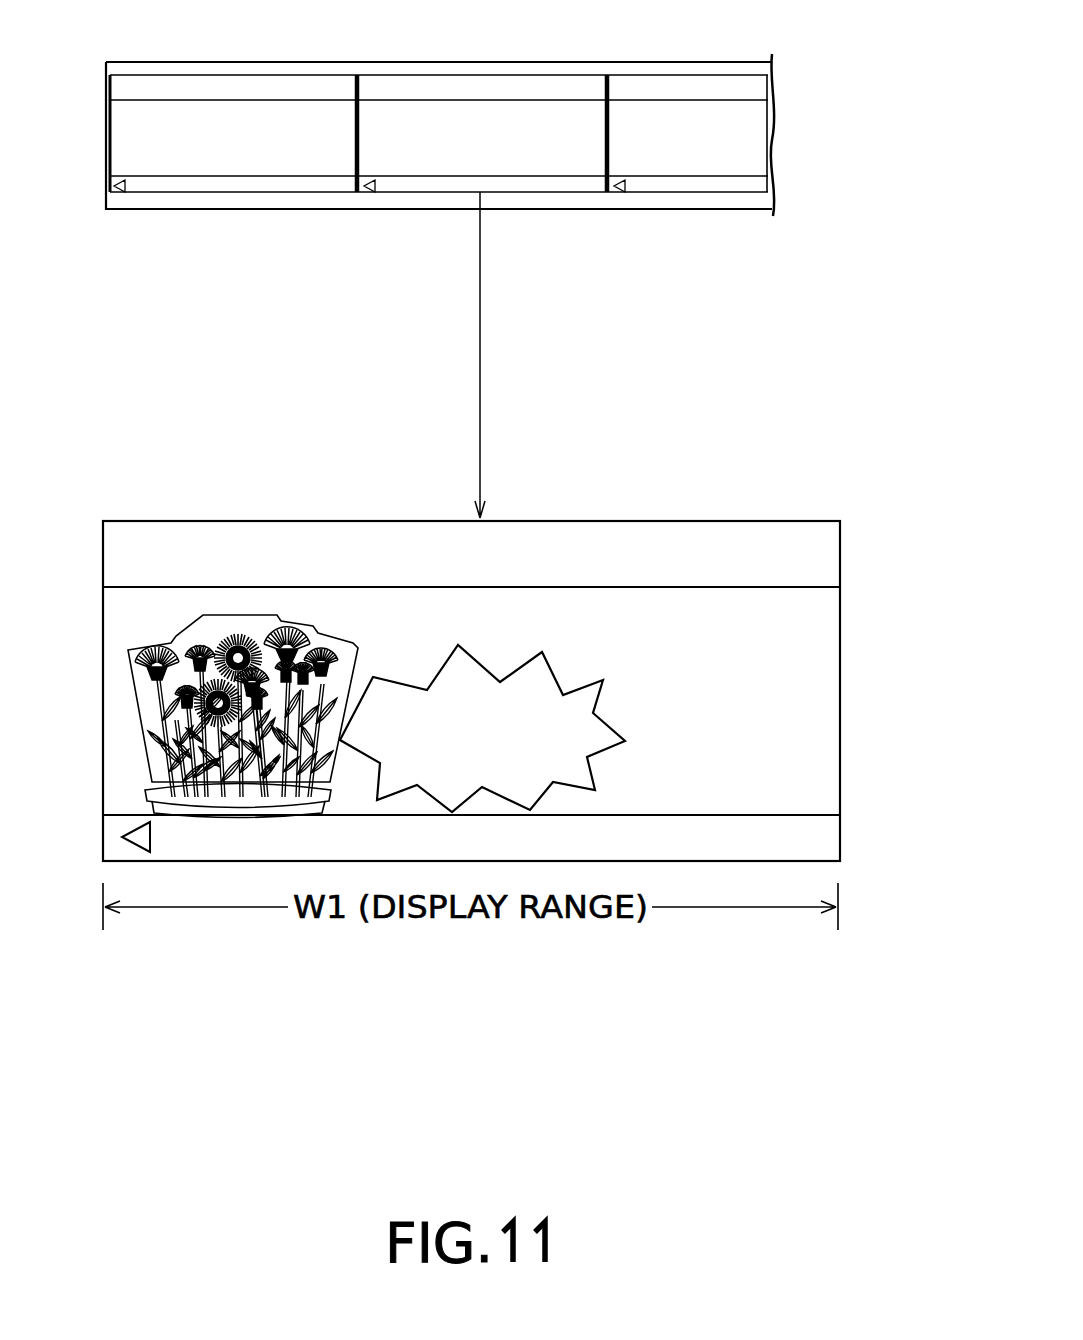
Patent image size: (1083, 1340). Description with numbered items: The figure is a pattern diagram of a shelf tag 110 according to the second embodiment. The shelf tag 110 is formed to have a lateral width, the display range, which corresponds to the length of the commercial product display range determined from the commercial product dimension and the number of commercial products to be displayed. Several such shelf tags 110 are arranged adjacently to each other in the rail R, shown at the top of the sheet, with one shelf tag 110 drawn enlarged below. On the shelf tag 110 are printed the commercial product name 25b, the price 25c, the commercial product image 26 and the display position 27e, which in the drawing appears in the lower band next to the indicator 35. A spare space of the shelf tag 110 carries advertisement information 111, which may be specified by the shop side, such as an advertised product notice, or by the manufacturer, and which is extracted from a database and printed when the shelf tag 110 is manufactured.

The rail R is at (621, 68).
The shelf tag 110 is at (471, 437).
The advertisement information 111 is at (492, 668).
The commercial product name 25b is at (803, 640).
The price 25c is at (803, 745).
The commercial product image 26 is at (113, 708).
The display position 27e is at (107, 836).
The scroll button indicator 35 is at (163, 838).